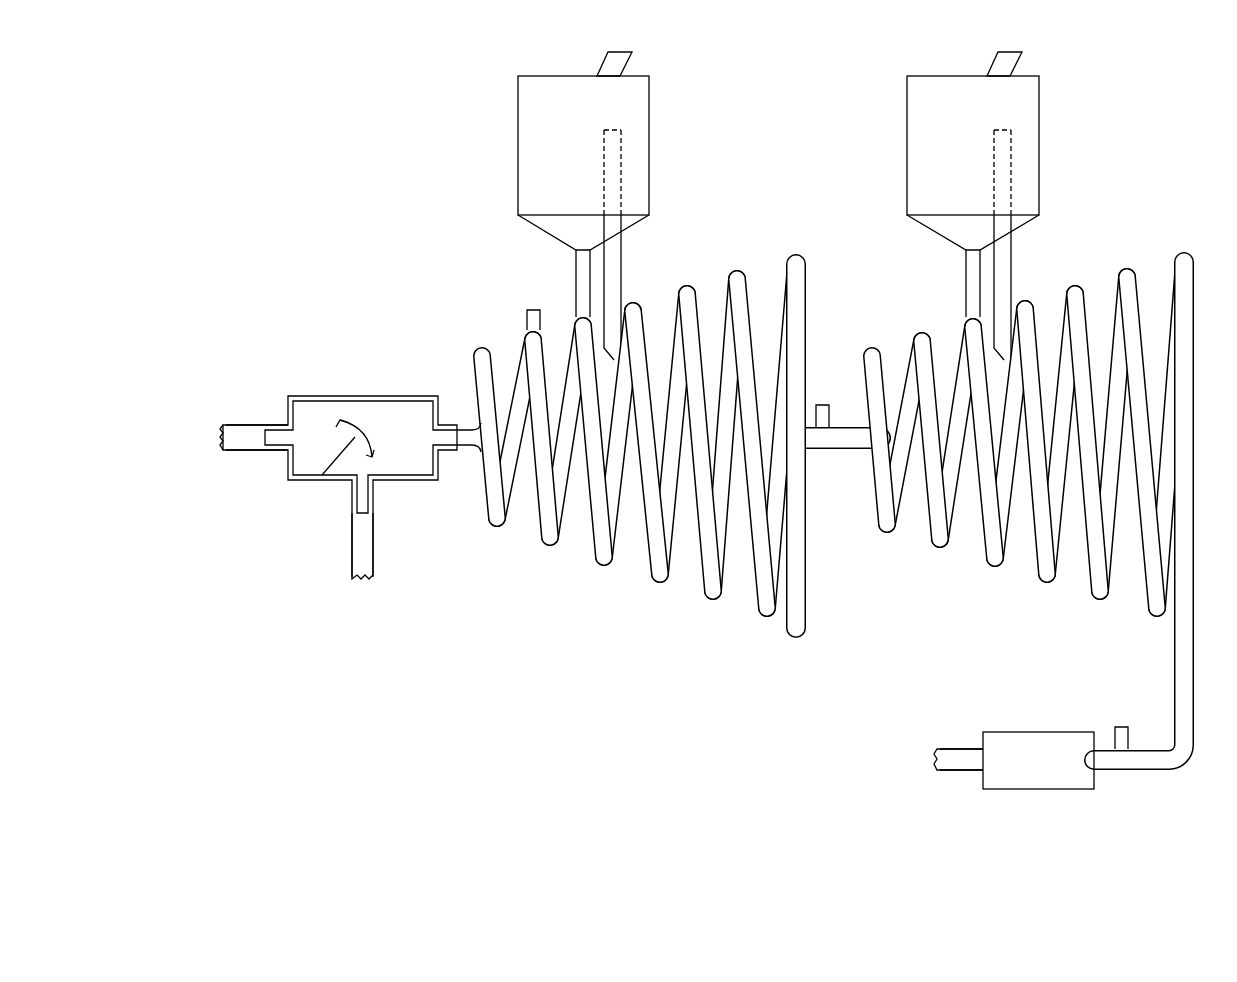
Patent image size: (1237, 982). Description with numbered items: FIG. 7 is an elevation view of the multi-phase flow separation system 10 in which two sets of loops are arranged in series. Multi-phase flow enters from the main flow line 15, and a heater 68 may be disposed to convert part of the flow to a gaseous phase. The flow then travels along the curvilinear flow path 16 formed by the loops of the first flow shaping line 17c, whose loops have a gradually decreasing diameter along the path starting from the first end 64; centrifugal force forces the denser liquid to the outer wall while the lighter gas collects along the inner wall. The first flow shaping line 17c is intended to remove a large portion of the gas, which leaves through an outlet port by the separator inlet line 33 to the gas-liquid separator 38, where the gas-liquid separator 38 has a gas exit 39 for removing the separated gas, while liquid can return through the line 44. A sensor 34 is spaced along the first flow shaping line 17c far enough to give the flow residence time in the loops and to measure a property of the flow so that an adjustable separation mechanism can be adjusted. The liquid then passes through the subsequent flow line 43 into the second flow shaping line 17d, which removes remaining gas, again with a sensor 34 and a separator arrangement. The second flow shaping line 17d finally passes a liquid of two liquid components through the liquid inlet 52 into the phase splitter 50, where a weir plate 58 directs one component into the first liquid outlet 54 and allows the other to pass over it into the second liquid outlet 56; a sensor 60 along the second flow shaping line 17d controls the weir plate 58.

The separation apparatus 10 is at (303, 167).
The main flow line 15 is at (962, 749).
The curvilinear flow path 16 is at (848, 460).
The first flow shaping line 17c is at (1137, 240).
The second flow shaping line 17d is at (737, 240).
The separator inlet line 33 is at (622, 262).
The sensor 34 is at (823, 404).
The gas-liquid separator 38 is at (745, 140).
The gas exit 39 is at (600, 65).
The subsequent flow line 43 is at (813, 450).
The line 44 is at (576, 294).
The phase splitter 50 is at (336, 446).
The liquid inlet 52 is at (430, 435).
The first liquid outlet 54 is at (352, 500).
The second liquid outlet 56 is at (280, 435).
The weir plate 58 is at (320, 460).
The sensor 60 is at (527, 316).
The first end 64 is at (955, 770).
The heater 68 is at (1017, 732).